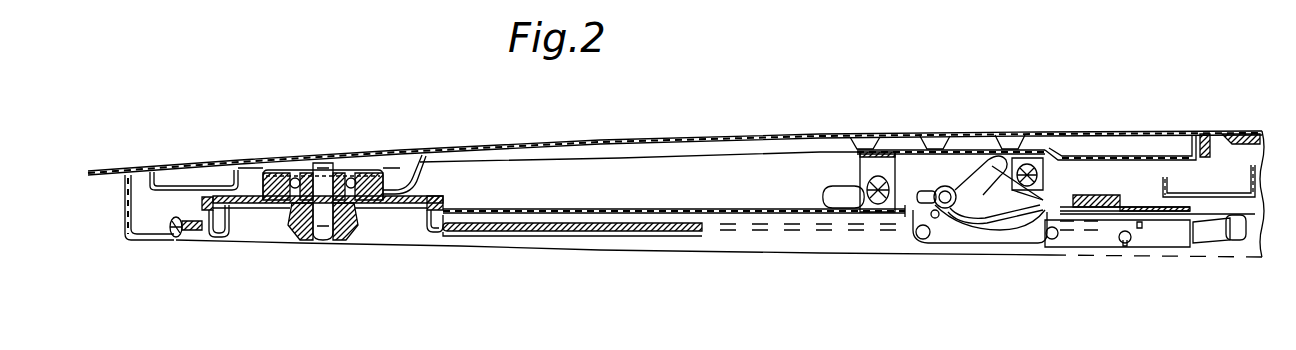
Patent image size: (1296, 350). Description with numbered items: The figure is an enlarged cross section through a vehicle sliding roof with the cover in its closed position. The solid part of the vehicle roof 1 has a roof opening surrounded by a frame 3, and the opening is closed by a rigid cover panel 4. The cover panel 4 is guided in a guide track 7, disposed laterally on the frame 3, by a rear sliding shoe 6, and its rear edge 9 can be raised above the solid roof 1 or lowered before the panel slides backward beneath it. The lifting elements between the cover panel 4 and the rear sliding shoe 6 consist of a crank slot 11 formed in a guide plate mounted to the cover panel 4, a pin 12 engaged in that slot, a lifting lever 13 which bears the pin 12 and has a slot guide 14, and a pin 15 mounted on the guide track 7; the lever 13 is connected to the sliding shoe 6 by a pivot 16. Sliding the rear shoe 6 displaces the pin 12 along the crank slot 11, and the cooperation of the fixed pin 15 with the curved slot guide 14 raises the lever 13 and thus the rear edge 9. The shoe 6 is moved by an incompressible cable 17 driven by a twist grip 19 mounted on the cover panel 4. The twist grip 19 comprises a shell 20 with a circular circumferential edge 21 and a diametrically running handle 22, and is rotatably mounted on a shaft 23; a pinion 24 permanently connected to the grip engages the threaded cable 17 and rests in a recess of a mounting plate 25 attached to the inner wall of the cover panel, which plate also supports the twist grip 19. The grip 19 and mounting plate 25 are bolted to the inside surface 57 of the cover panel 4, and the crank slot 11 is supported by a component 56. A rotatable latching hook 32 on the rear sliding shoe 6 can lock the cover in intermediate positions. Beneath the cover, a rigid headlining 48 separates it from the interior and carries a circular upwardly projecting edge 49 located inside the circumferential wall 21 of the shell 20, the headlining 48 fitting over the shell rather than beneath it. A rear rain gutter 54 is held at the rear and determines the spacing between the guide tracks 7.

The solid part of the vehicle roof 1 is at (1239, 131).
The frame 3 is at (151, 242).
The cover panel 4 is at (703, 137).
The rear sliding shoe 6 is at (1118, 197).
The guide track 7 is at (1156, 226).
The rear edge 9 is at (1208, 130).
The crank slot 11 is at (984, 175).
The pin 12 is at (947, 188).
The lifting lever 13 is at (953, 242).
The slot guide 14 is at (997, 244).
The pin 15 is at (921, 246).
The pivot 16 is at (1050, 242).
The incompressible cable 17 is at (296, 178).
The twist grip 19 is at (292, 214).
The shell 20 is at (390, 205).
The circular circumferential edge 21 is at (442, 234).
The handle 22 is at (291, 238).
The shaft 23 is at (323, 220).
The pinion 24 is at (343, 171).
The mounting plate 25 is at (278, 170).
The latching hook 32 is at (1232, 247).
The headlining 48 is at (653, 232).
The upwardly projecting edge 49 is at (425, 217).
The rear rain gutter 54 is at (1213, 200).
The component supporting crank slot 56 is at (877, 167).
The inside surface 57 is at (402, 188).